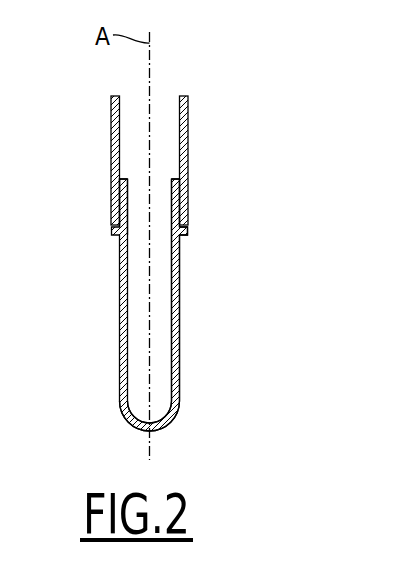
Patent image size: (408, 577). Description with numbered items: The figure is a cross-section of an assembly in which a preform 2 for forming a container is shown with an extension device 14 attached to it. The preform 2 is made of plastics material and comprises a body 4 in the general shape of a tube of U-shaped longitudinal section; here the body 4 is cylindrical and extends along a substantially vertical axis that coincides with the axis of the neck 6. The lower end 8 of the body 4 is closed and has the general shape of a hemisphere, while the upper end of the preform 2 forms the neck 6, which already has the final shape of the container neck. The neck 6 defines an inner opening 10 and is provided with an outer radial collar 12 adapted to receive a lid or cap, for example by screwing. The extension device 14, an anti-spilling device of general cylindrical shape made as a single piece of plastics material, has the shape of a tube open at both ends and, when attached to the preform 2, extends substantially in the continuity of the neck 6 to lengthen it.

The preform 2 is at (121, 368).
The body 4 is at (180, 338).
The neck 6 is at (175, 189).
The lower end 8 is at (168, 427).
The inner opening 10 is at (140, 208).
The outer radial collar 12 is at (182, 218).
The extension device 14 is at (110, 128).